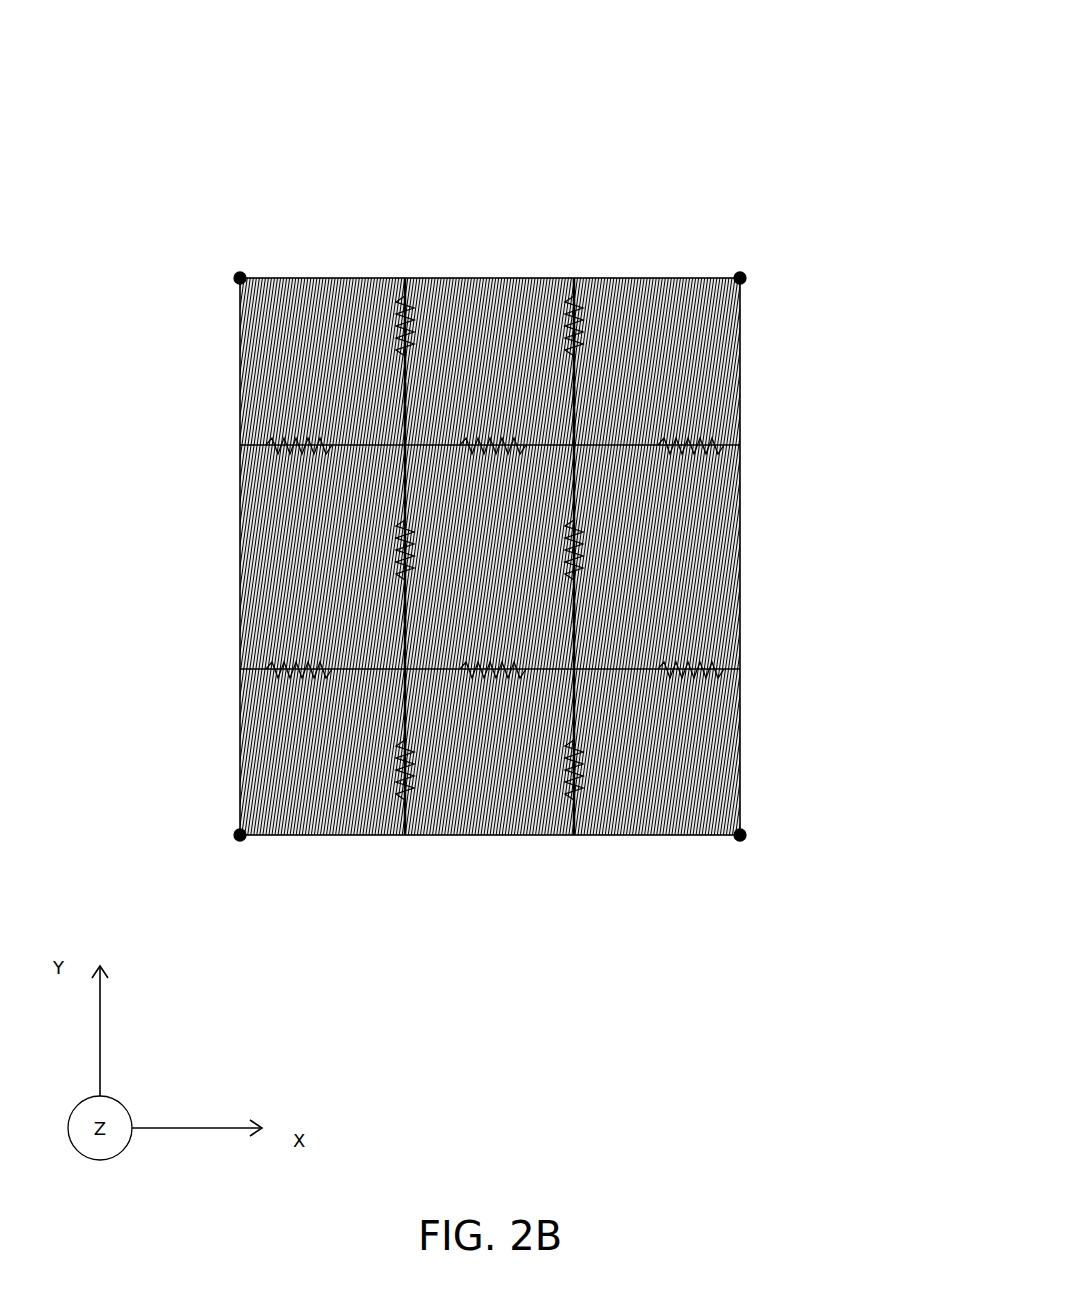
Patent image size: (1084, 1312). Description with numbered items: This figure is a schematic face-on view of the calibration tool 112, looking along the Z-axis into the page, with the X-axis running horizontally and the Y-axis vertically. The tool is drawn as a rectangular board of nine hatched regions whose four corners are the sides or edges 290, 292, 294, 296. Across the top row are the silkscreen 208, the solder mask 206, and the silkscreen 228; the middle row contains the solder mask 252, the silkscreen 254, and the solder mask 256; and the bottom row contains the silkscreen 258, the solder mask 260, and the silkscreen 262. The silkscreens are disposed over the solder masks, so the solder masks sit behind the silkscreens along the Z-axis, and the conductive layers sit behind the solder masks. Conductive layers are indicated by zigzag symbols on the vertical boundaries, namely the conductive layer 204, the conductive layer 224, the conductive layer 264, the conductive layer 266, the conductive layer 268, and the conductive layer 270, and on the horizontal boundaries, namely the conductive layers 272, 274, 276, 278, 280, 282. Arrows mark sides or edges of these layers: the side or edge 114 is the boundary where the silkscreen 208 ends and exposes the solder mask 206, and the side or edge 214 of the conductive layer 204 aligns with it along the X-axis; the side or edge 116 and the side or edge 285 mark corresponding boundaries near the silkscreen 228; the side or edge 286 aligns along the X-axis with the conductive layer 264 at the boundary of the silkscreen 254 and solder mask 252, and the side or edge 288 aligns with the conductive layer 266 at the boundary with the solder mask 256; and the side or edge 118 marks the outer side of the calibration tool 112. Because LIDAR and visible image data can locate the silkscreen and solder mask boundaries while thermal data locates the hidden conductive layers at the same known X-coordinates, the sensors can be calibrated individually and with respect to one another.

The calibration tool 112 is at (893, 22).
The side or edge 118 is at (745, 604).
The side or edge 114 is at (413, 408).
The side or edge 116 is at (582, 388).
The conductive layer 204 is at (401, 324).
The solder mask 206 is at (469, 362).
The silkscreen 208 is at (299, 362).
The side or edge 214 is at (387, 388).
The conductive layer 224 is at (570, 324).
The silkscreen 228 is at (638, 362).
The solder mask 252 is at (303, 558).
The silkscreen 254 is at (475, 558).
The solder mask 256 is at (640, 558).
The silkscreen 258 is at (301, 762).
The solder mask 260 is at (475, 762).
The silkscreen 262 is at (646, 762).
The conductive layer 264 is at (403, 547).
The conductive layer 266 is at (572, 547).
The conductive layer 268 is at (404, 769).
The conductive layer 270 is at (572, 769).
The conductive layer 272 is at (288, 448).
The conductive layer 274 is at (482, 448).
The conductive layer 276 is at (668, 448).
The conductive layer 278 is at (288, 672).
The conductive layer 280 is at (482, 672).
The conductive layer 282 is at (668, 672).
The side or edge 285 is at (582, 415).
The side or edge 286 is at (413, 605).
The side or edge 288 is at (582, 605).
The side or edge 290 is at (237, 264).
The side or edge 292 is at (736, 264).
The side or edge 294 is at (228, 822).
The side or edge 296 is at (737, 822).